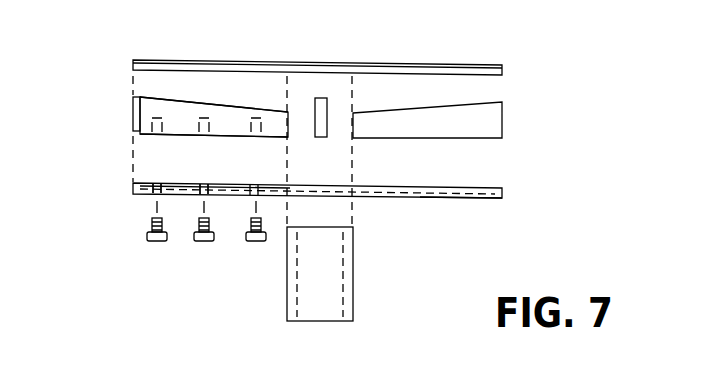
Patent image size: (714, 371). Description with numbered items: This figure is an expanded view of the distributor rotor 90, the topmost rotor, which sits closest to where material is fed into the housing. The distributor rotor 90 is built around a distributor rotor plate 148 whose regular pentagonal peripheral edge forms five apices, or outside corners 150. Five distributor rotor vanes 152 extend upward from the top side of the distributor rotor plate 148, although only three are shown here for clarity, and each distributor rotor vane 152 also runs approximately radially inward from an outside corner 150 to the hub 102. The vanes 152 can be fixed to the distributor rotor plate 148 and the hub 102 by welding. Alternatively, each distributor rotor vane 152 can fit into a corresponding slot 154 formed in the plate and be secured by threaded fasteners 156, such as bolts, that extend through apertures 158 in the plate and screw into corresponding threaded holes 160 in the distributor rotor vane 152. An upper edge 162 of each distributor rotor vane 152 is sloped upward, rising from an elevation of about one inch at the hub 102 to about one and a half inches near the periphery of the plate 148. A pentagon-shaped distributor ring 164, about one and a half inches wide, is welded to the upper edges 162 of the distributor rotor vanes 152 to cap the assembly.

The distributor rotor 90 is at (530, 83).
The hub 102 is at (355, 287).
The distributor rotor plate 148 is at (457, 200).
The outside corners 150 is at (134, 189).
The distributor rotor vanes 152 is at (134, 110).
The slot 154 is at (183, 182).
The threaded fasteners 156 is at (148, 236).
The apertures 158 is at (155, 195).
The threaded holes 160 is at (158, 136).
The upper edge 162 is at (238, 106).
The distributor ring 164 is at (150, 60).